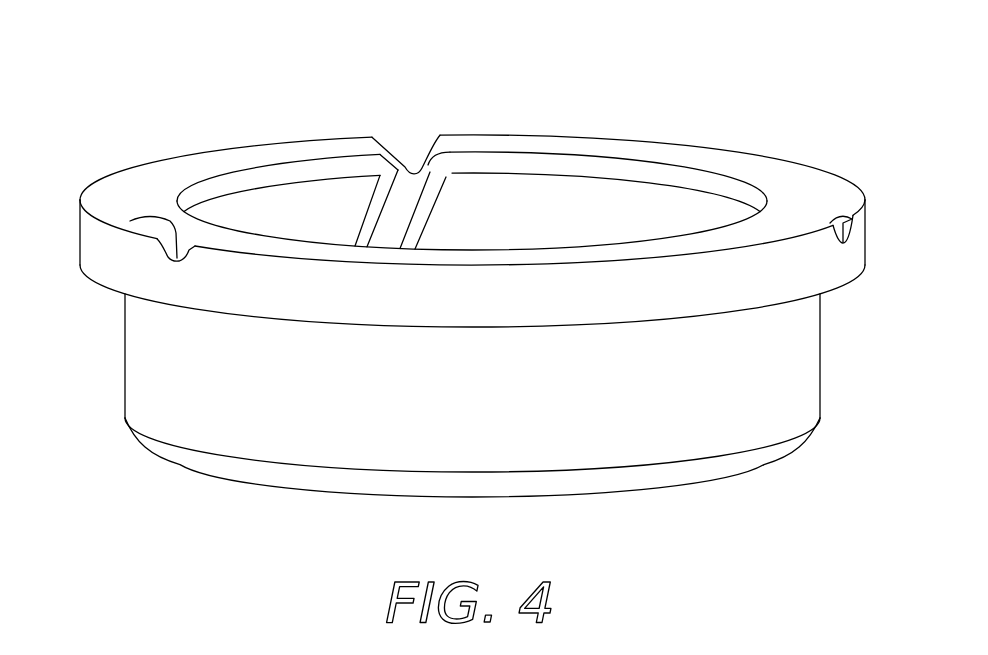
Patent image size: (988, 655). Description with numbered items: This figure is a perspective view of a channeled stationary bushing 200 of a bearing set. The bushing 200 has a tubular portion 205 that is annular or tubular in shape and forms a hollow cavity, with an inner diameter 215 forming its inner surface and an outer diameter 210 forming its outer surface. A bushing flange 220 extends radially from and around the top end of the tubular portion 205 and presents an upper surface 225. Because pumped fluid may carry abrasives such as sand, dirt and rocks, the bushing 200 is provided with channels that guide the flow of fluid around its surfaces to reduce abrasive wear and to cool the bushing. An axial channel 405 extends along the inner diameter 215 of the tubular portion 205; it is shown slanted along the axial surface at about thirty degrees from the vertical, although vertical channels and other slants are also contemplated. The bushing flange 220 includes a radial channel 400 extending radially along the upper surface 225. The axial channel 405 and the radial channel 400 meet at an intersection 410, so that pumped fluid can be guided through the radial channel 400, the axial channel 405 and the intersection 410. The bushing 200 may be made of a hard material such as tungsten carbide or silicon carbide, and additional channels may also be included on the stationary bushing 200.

The bushing 200 is at (174, 58).
The tubular portion 205 is at (476, 433).
The outer diameter 210 is at (797, 385).
The inner diameter 215 is at (628, 207).
The bushing flange 220 is at (767, 282).
The upper surface 225 is at (687, 157).
The radial channel 400 is at (170, 230).
The axial channel 405 is at (440, 222).
The intersection 410 is at (392, 190).